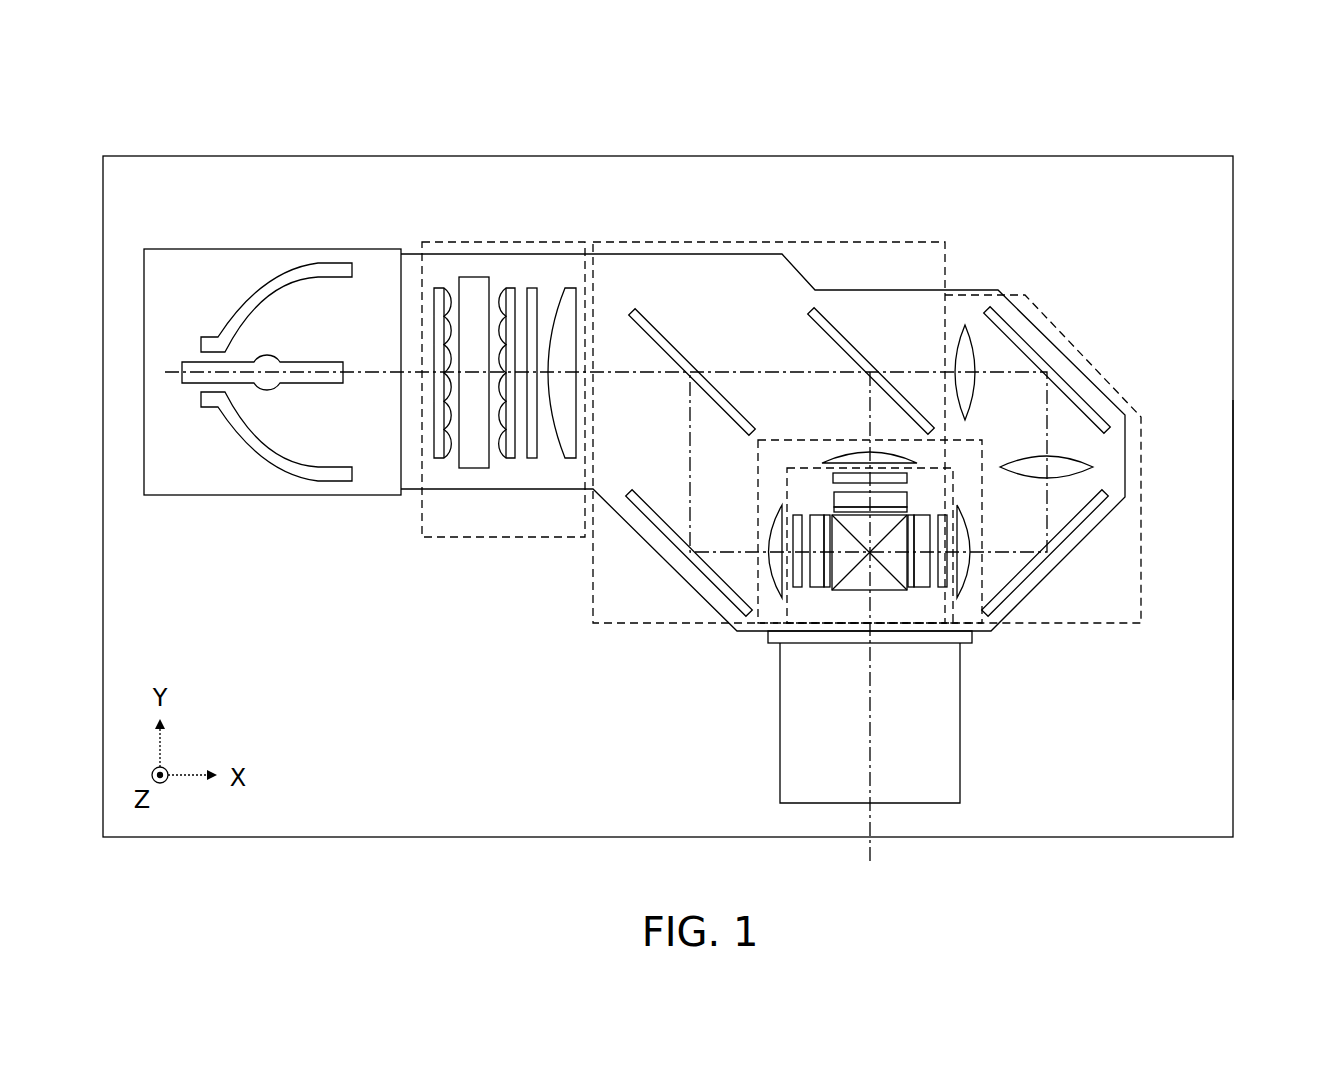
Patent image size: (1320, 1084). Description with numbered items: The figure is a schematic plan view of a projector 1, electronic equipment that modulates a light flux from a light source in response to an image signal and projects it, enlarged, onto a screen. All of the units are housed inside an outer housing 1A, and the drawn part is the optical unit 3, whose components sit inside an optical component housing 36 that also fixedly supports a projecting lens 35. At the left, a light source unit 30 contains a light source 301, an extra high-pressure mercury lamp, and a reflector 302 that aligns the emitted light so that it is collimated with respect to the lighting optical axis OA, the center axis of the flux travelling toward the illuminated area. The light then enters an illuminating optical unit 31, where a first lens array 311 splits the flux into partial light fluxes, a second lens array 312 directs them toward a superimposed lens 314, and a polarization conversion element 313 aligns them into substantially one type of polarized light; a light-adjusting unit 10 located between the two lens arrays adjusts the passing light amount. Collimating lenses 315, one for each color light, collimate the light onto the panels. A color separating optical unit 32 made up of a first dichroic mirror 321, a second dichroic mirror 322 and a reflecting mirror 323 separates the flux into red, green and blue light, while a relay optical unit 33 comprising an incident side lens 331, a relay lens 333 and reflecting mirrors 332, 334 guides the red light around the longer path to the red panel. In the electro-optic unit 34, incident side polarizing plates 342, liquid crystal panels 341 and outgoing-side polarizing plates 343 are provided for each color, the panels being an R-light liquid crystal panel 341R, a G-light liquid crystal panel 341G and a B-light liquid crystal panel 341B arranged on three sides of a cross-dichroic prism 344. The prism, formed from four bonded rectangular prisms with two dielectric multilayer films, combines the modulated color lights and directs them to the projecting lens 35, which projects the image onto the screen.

The projector 1 is at (1075, 126).
The outer housing 1A is at (1233, 582).
The optical unit 3 is at (1060, 266).
The light-adjusting unit 10 is at (468, 277).
The light source unit 30 is at (272, 392).
The light source 301 is at (293, 385).
The reflector 302 is at (243, 430).
The illuminating optical unit 31 is at (497, 421).
The first lens array 311 is at (438, 455).
The second lens array 312 is at (510, 455).
The polarization conversion element 313 is at (531, 455).
The superimposed lens 314 is at (573, 448).
The collimating lenses 315 is at (770, 552).
The color separating optical unit 32 is at (769, 399).
The first dichroic mirror 321 is at (660, 340).
The second dichroic mirror 322 is at (840, 335).
The reflecting mirror 323 is at (657, 518).
The relay optical unit 33 is at (1084, 421).
The incident side lens 331 is at (970, 340).
The reflecting mirror 332 is at (1100, 410).
The relay lens 333 is at (1035, 467).
The reflecting mirror 334 is at (1065, 540).
The electro-optic unit 34 is at (872, 556).
The liquid crystal panel 341 is at (872, 540).
The G-light liquid crystal panel 341G is at (853, 497).
The B-light liquid crystal panel 341B is at (817, 590).
The R-light liquid crystal panel 341R is at (922, 590).
The incident side polarizing plates 342 is at (830, 478).
The outgoing-side polarizing plates 343 is at (833, 507).
The cross-dichroic prism 344 is at (882, 582).
The projecting lens 35 is at (950, 762).
The optical component housing 36 is at (627, 527).
The lighting optical axis OA is at (634, 378).